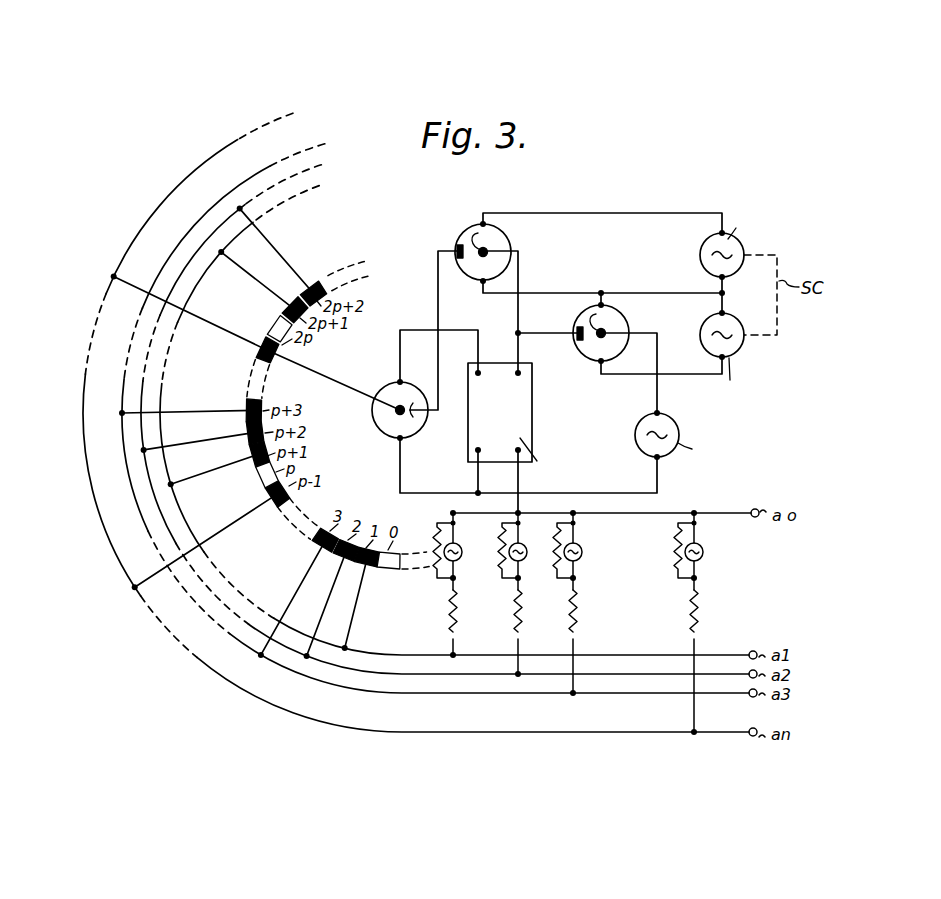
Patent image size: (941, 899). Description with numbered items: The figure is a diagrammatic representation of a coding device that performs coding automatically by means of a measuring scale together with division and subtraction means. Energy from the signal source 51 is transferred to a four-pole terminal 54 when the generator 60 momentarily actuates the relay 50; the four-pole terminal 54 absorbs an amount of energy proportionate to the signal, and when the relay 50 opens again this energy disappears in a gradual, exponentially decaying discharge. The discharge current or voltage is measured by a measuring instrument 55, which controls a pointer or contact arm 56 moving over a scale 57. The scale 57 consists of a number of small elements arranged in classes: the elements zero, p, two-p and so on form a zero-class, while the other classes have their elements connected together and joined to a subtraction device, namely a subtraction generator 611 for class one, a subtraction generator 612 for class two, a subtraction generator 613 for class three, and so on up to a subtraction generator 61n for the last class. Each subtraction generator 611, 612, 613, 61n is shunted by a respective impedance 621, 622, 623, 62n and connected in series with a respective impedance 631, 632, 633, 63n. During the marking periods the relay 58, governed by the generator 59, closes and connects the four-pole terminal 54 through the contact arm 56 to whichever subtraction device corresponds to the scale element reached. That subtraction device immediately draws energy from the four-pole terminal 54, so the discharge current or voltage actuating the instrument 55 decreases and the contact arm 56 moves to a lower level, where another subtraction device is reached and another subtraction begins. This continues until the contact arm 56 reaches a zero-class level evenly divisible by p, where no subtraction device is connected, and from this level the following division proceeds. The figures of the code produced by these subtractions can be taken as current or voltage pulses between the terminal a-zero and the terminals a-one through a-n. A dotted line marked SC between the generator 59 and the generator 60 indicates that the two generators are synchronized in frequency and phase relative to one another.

The relay 50 is at (583, 353).
The signal source 51 is at (682, 428).
The four-pole terminal 54 is at (532, 422).
The measuring instrument 55 is at (380, 430).
The pointer 56 is at (347, 388).
The scale 57 is at (305, 521).
The relay 58 is at (465, 232).
The generator 59 is at (700, 245).
The generator 60 is at (736, 349).
The subtraction generator 611 is at (461, 545).
The subtraction generator 612 is at (538, 532).
The subtraction generator 613 is at (581, 546).
The subtraction generator 61n is at (702, 546).
The impedance 621 is at (436, 553).
The impedance 622 is at (498, 555).
The impedance 623 is at (564, 556).
The impedance 62n is at (673, 556).
The impedance 631 is at (450, 605).
The impedance 632 is at (510, 604).
The impedance 633 is at (570, 603).
The impedance 63n is at (689, 602).